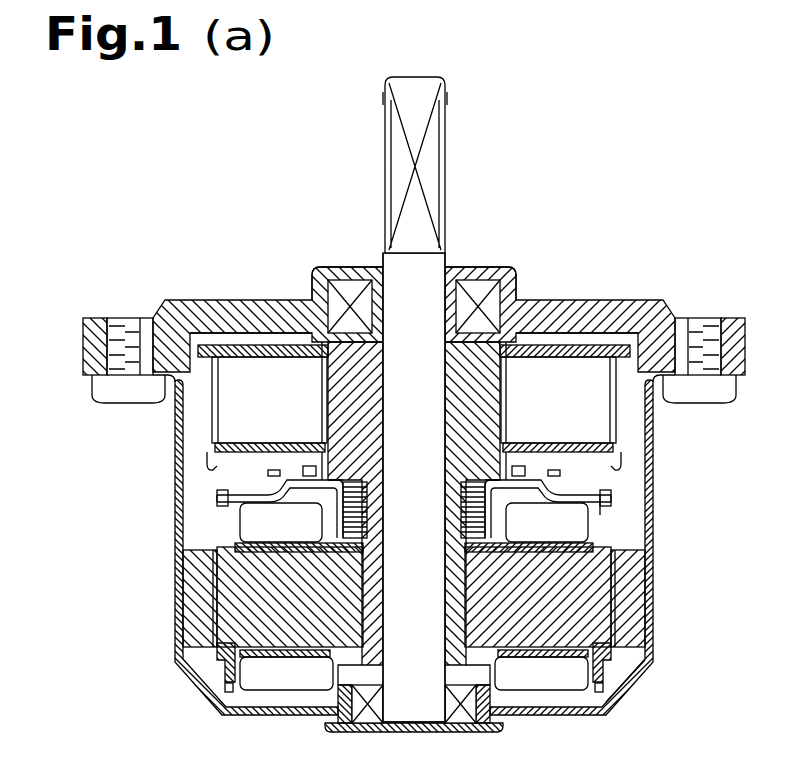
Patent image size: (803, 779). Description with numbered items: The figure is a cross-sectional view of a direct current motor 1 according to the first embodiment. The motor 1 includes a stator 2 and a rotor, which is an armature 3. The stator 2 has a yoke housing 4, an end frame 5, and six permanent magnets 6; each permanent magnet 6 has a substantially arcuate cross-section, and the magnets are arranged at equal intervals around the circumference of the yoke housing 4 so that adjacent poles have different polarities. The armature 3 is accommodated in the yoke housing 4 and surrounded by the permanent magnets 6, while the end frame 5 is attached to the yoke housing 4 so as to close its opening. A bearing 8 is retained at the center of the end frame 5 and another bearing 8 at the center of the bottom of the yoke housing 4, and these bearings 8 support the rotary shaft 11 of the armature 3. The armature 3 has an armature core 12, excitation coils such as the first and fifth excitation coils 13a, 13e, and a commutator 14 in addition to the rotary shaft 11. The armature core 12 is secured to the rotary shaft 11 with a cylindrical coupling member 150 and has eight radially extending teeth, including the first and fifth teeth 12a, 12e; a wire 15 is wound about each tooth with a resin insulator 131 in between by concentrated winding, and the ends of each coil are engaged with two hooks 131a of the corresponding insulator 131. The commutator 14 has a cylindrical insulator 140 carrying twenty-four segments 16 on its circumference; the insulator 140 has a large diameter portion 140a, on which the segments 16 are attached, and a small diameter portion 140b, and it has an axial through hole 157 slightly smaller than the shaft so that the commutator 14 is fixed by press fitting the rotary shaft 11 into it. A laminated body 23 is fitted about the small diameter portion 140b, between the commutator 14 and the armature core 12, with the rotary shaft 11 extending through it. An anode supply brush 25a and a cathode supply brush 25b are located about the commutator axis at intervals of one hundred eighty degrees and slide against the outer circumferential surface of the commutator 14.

The direct current motor 1 is at (597, 173).
The rotary shaft 11 is at (434, 156).
The insulator 140 is at (338, 290).
The bearing 8 is at (476, 290).
The commutator 14 is at (515, 300).
The end frame 5 is at (246, 298).
The through hole 157 is at (395, 408).
The segment 16 is at (318, 401).
The large diameter portion 140a is at (327, 426).
The cathode supply brush 25b is at (228, 417).
The anode supply brush 25a is at (595, 418).
The wire 15 is at (262, 493).
The yoke housing 4 is at (178, 483).
The stator 2 is at (657, 479).
The hook 131a is at (215, 504).
The armature 3 is at (613, 536).
The tooth 12e is at (212, 565).
The tooth 12a is at (612, 572).
The permanent magnet 6 is at (190, 605).
The small diameter portion 140b is at (375, 500).
The laminated body 23 is at (488, 526).
The coupling member 150 is at (440, 592).
The armature core 12 is at (624, 667).
The excitation coil 13e is at (280, 690).
The insulator 131 is at (322, 690).
The excitation coil 13a is at (560, 690).